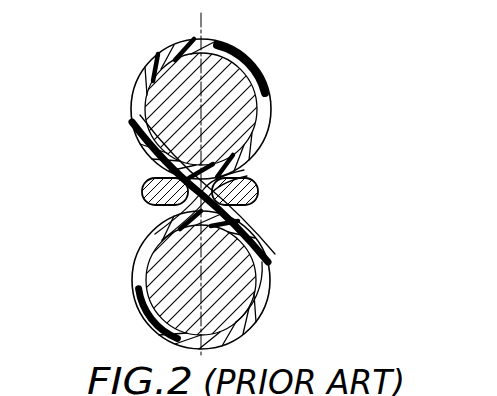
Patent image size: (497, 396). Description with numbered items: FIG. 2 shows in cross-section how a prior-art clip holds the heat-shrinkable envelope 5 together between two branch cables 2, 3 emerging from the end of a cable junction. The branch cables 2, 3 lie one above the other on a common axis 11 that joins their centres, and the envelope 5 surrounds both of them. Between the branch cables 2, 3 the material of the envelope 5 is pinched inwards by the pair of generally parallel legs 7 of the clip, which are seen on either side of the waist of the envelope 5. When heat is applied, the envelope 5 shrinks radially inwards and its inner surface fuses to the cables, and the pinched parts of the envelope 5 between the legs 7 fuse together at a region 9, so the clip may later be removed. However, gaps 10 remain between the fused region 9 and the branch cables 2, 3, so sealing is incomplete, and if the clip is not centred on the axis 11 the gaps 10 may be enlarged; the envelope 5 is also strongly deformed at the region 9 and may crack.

The branch cable 2 is at (238, 107).
The branch cable 3 is at (237, 283).
The envelope 5 is at (130, 290).
The legs 7 is at (141, 196).
The region 9 is at (232, 180).
The gaps 10 is at (142, 122).
The axis 11 is at (203, 31).